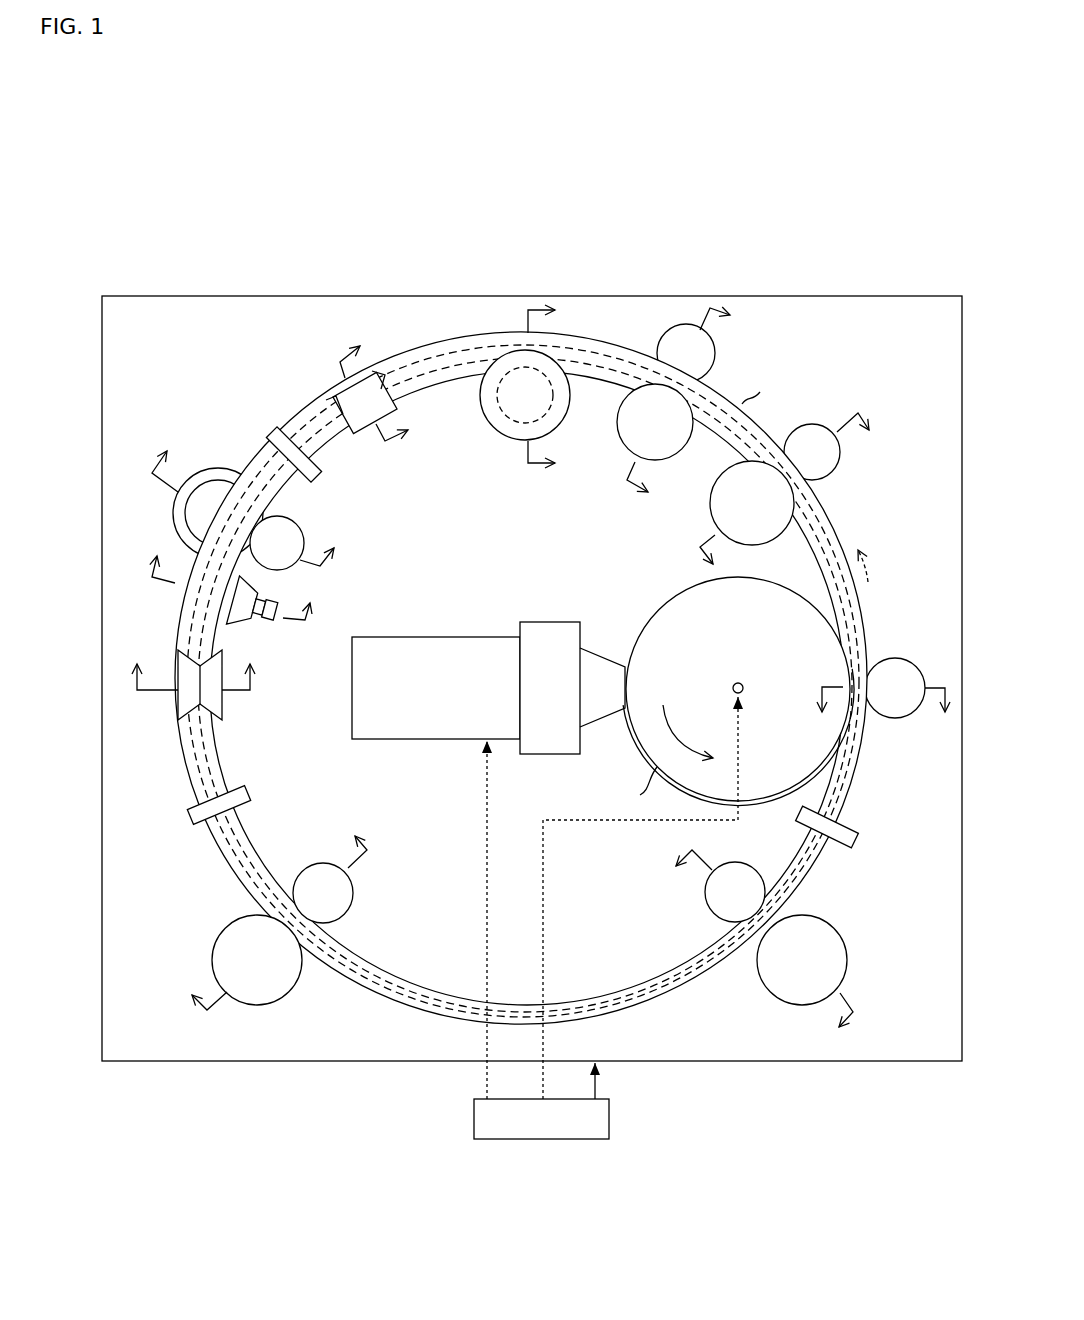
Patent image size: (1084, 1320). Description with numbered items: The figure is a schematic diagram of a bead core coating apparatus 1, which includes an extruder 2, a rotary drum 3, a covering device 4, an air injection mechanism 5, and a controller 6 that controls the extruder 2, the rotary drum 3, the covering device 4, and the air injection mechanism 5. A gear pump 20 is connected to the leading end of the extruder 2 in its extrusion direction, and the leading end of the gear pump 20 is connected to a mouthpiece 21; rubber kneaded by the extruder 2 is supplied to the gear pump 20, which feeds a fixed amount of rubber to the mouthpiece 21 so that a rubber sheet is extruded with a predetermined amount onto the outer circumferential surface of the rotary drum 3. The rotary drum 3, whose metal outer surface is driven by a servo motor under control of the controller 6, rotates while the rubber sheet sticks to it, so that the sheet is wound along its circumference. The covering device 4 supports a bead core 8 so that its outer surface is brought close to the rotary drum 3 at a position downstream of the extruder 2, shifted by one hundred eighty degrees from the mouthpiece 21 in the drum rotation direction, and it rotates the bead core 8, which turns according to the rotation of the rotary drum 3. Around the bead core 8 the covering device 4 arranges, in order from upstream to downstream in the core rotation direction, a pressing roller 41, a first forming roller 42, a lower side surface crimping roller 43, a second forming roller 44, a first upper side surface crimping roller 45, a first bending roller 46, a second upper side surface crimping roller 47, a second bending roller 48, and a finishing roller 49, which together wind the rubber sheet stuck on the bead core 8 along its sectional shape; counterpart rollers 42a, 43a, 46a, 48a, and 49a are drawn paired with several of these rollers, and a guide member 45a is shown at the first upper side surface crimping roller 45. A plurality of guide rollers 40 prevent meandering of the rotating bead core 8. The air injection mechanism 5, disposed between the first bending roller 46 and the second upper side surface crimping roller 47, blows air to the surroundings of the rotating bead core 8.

The bead core coating apparatus 1 is at (745, 258).
The extruder 2 is at (390, 637).
The rotary drum 3 is at (660, 606).
The covering device 4 is at (790, 1062).
The air injection mechanism 5 is at (272, 626).
The controller 6 is at (610, 1120).
The bead core 8 is at (838, 545).
The gear pump 20 is at (550, 622).
The mouthpiece 21 is at (603, 720).
The guide rollers 40 is at (272, 432).
The pressing roller 41 is at (905, 661).
The first forming roller 42 is at (711, 518).
The pressing roller 42a is at (810, 424).
The lower side surface crimping roller 43 is at (622, 450).
The pressing roller 43a is at (665, 337).
The second forming roller 44 is at (512, 440).
The first upper side surface crimping roller 45 is at (330, 397).
The guide plate 45a is at (354, 437).
The first bending roller 46 is at (216, 468).
The pressing roller 46a is at (301, 531).
The second upper side surface crimping roller 47 is at (178, 703).
The second bending roller 48 is at (290, 992).
The pressing roller 48a is at (353, 903).
The finishing roller 49 is at (769, 992).
The pressing roller 49a is at (709, 907).